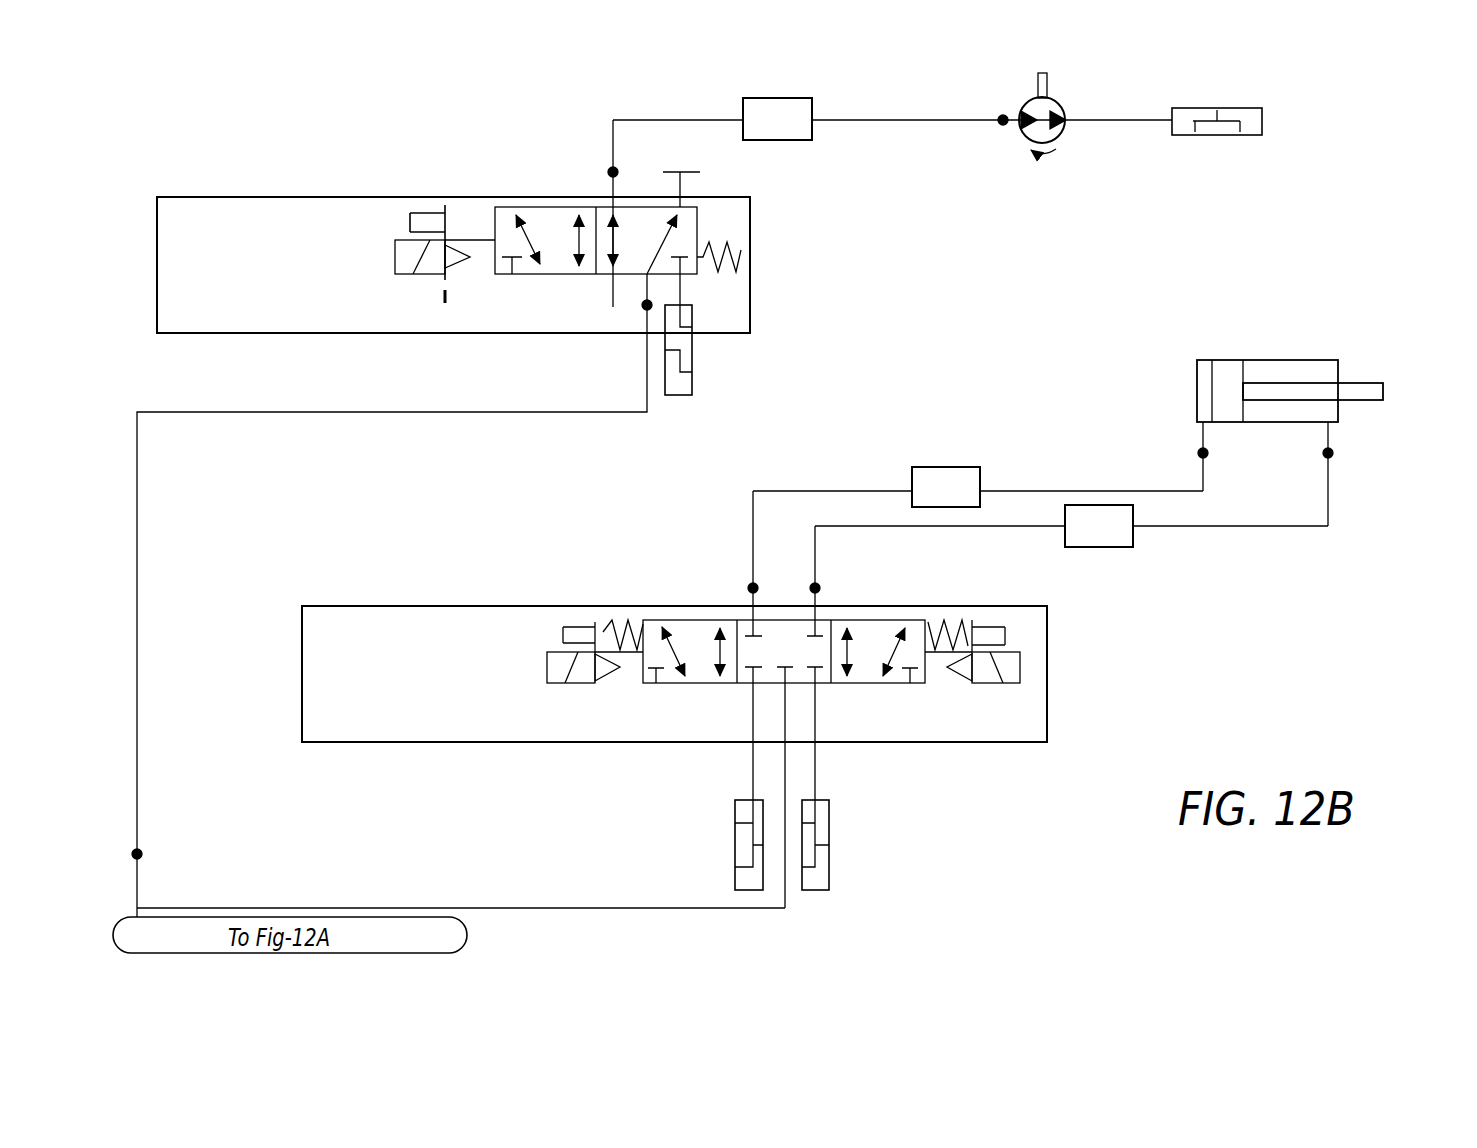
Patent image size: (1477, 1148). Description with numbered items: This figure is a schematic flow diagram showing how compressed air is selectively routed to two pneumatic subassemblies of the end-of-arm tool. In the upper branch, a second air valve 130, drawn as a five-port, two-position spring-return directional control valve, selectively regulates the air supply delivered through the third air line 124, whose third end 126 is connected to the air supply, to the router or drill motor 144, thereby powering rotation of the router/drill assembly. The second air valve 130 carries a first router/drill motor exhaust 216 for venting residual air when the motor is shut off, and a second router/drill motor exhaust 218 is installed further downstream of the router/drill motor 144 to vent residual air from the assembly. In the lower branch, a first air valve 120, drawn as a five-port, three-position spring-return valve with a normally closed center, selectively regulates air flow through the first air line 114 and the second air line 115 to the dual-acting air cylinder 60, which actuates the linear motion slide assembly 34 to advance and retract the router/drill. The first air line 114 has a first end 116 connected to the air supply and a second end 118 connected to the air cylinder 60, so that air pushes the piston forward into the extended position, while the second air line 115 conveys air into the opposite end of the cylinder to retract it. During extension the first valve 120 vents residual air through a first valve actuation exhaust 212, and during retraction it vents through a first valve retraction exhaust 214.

The second air valve 130 is at (282, 178).
The third end 126 is at (570, 160).
The third air line 124 is at (777, 119).
The router or drill motor 144 is at (993, 110).
The second router/drill motor exhaust 218 is at (1243, 108).
The linear motion slide assembly 34 is at (1372, 300).
The air cylinder 60 is at (1393, 398).
The second end 118 is at (1182, 458).
The first air line 114 is at (978, 487).
The second air line 115 is at (1071, 526).
The first end 116 is at (728, 562).
The first air valve 120 is at (310, 598).
The first router/drill motor exhaust 216 is at (678, 395).
The first valve retraction exhaust 214 is at (735, 883).
The first valve actuation exhaust 212 is at (829, 887).